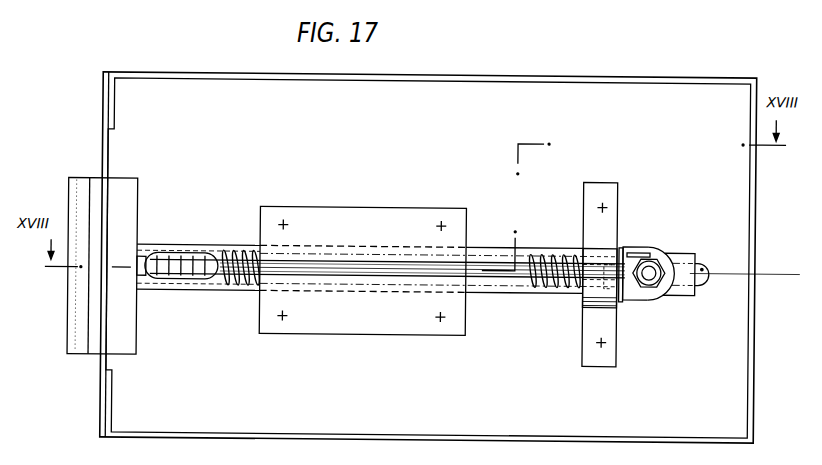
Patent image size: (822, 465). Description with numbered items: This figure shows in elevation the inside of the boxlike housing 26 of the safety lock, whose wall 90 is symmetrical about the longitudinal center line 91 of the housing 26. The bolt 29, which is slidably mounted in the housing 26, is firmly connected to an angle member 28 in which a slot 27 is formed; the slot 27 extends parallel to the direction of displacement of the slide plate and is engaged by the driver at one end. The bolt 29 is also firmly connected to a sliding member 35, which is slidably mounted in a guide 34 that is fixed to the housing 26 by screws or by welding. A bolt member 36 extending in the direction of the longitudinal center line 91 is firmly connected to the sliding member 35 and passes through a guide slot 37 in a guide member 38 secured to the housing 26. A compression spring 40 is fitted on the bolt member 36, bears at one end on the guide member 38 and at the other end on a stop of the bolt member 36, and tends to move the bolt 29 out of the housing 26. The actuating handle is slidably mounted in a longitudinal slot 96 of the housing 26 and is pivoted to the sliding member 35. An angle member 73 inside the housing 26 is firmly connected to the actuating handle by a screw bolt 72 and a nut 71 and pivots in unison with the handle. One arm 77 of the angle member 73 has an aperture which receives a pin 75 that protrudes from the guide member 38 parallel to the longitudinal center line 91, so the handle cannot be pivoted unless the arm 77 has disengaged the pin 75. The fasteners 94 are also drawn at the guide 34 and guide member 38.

The housing 26 is at (190, 94).
The slot 27 is at (166, 260).
The angle member 28 is at (139, 261).
The bolt 29 is at (78, 189).
The guide 34 is at (360, 224).
The sliding member 35 is at (503, 249).
The bolt member 36 is at (475, 268).
The guide slot 37 is at (597, 248).
The guide member 38 is at (590, 192).
The compression spring 40 is at (232, 259).
The nut 71 is at (648, 262).
The screw bolt 72 is at (663, 268).
The angle member 73 is at (660, 291).
The pin 75 is at (633, 255).
The arm 77 is at (622, 297).
The wall 90 is at (758, 338).
The longitudinal center line 91 is at (763, 270).
The fastener 94 is at (283, 221).
The longitudinal slot 96 is at (702, 266).